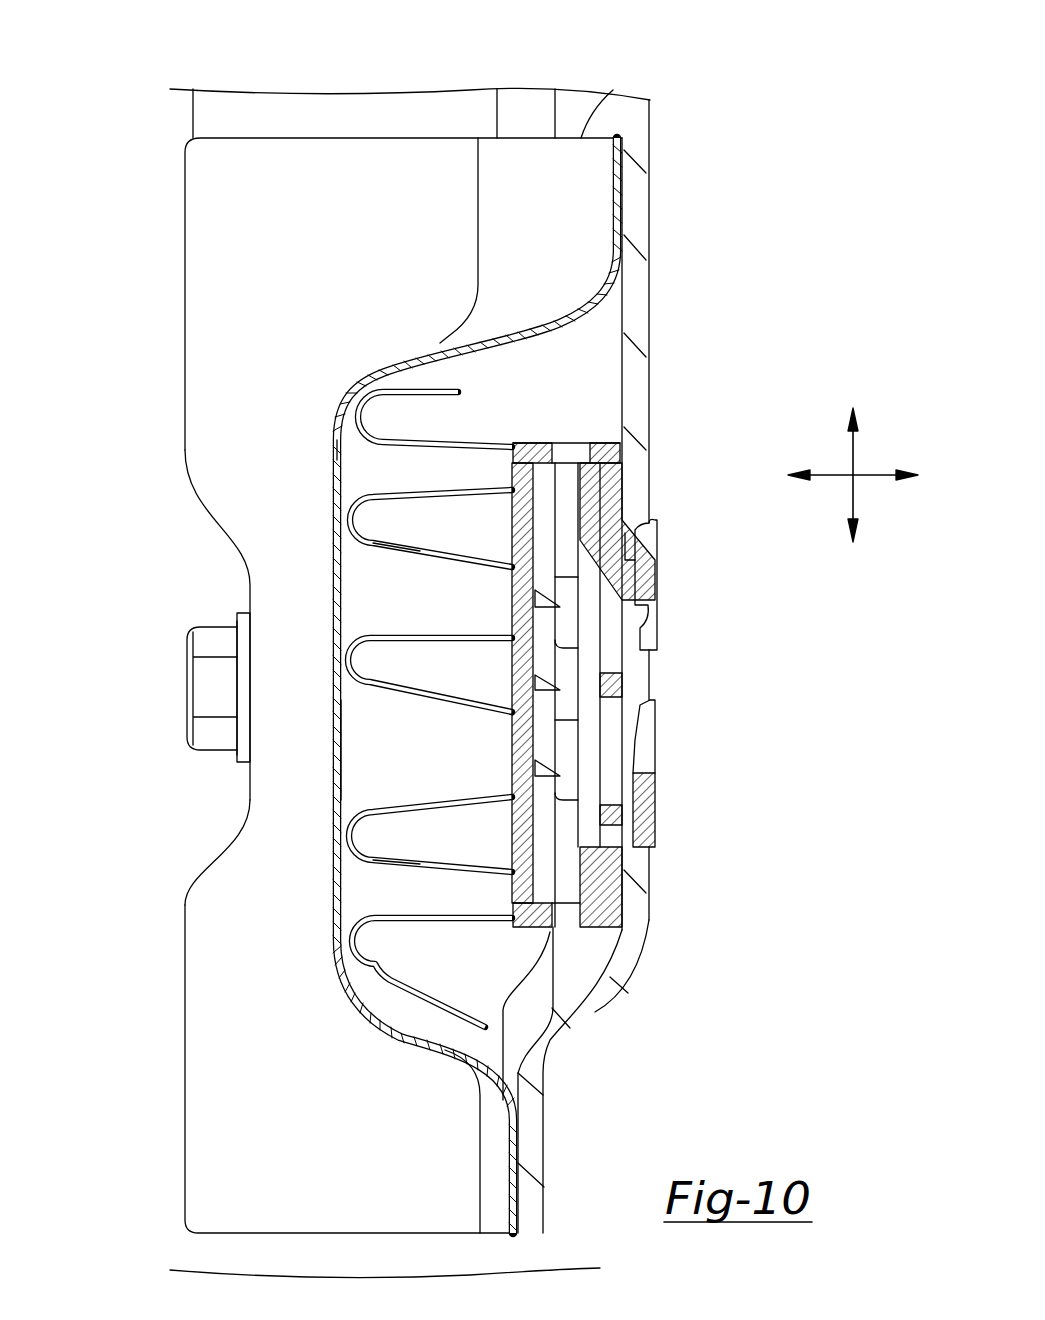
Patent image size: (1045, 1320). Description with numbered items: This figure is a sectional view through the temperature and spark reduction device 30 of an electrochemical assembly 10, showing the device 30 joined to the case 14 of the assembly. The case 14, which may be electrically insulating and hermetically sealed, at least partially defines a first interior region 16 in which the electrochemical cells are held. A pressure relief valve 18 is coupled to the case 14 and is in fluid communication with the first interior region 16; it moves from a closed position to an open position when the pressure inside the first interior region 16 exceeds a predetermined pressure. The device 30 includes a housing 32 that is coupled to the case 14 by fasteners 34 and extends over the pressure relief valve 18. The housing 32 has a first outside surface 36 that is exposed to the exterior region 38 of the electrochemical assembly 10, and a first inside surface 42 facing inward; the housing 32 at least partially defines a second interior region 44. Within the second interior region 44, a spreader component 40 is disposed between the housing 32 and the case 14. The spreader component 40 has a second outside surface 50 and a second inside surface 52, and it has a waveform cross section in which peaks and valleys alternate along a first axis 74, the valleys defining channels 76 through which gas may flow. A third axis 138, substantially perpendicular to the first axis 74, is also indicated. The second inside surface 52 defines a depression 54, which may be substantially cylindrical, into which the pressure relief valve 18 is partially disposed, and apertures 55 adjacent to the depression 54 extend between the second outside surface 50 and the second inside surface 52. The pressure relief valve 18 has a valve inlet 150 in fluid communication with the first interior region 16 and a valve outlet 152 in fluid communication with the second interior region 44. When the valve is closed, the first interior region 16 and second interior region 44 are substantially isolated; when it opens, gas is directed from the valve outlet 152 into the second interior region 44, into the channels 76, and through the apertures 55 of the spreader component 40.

The electrochemical assembly 10 is at (618, 68).
The case 14 is at (640, 325).
The first interior region 16 is at (708, 183).
The pressure relief valve 18 is at (650, 797).
The temperature and spark reduction device 30 is at (238, 200).
The housing 32 is at (207, 478).
The fasteners 34 is at (205, 686).
The first outside surface 36 is at (207, 878).
The exterior region 38 is at (66, 135).
The spreader component 40 is at (356, 422).
The first inside surface 42 is at (340, 777).
The second interior region 44 is at (515, 362).
The second outside surface 50 is at (387, 565).
The second inside surface 52 is at (392, 858).
The depression 54 is at (607, 478).
The apertures 55 is at (530, 607).
The first axis 74 is at (848, 440).
The channels 76 is at (378, 408).
The third axis 138 is at (828, 478).
The valve inlet 150 is at (632, 673).
The valve outlet 152 is at (520, 727).